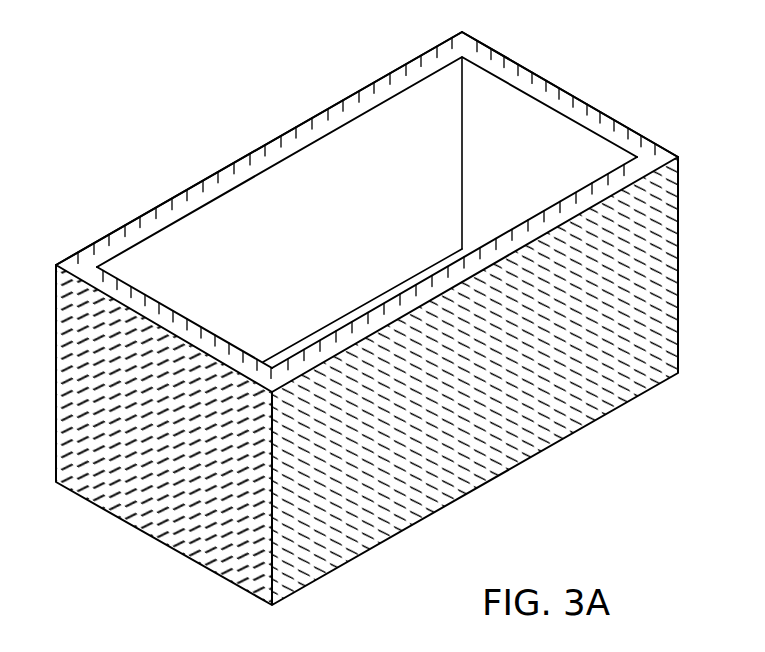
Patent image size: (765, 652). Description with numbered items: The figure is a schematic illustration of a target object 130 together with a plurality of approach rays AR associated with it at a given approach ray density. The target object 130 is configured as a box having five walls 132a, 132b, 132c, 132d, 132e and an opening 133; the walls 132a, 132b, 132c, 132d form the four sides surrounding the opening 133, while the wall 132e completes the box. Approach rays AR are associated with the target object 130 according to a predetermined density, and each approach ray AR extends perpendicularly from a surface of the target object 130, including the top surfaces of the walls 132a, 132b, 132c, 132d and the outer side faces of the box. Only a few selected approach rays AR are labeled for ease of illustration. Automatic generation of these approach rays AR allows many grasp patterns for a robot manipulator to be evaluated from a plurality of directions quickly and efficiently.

The target object 130 is at (363, 310).
The opening 133 is at (362, 189).
The wall 132a is at (163, 283).
The wall 132b is at (325, 116).
The wall 132c is at (538, 75).
The wall 132d is at (582, 190).
The wall 132e is at (412, 277).
The approach ray AR is at (157, 215).